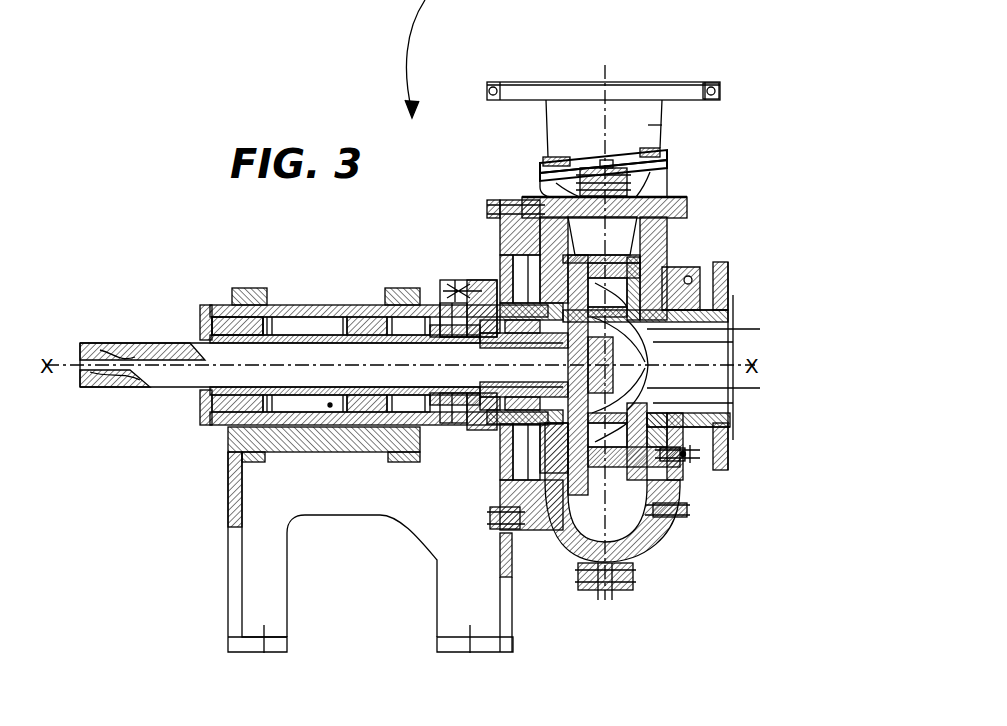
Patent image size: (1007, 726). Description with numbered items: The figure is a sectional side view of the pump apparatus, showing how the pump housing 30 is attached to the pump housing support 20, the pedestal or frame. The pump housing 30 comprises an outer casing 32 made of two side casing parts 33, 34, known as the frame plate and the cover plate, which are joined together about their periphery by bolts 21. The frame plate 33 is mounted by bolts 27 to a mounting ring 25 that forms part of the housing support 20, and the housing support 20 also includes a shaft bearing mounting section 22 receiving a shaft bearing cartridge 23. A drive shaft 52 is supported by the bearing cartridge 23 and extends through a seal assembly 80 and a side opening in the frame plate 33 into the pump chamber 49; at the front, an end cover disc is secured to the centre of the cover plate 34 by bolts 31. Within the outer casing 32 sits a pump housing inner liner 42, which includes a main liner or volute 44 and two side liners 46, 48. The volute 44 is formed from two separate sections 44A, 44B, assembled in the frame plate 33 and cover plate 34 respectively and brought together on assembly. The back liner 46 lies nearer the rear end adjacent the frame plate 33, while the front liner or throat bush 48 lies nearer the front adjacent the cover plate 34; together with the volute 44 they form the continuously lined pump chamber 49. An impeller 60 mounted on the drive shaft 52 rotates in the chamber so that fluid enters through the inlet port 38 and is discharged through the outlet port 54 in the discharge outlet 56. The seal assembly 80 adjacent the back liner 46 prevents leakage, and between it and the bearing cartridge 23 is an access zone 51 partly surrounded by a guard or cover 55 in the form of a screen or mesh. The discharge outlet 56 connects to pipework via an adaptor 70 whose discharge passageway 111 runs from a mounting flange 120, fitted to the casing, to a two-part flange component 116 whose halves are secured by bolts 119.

The pump housing support 20 is at (450, 615).
The bolts 21 is at (620, 600).
The shaft bearing mounting section 22 is at (228, 450).
The shaft bearing cartridge 23 is at (210, 410).
The mounting ring 25 is at (497, 242).
The bolts 27 is at (487, 525).
The pump housing 30 is at (702, 247).
The bolts 31 is at (690, 460).
The outer casing 32 is at (673, 547).
The side casing part (frame plate) 33 is at (567, 545).
The side casing part (cover plate) 34 is at (666, 570).
The inlet port 38 is at (737, 327).
The pump housing inner liner 42 is at (677, 523).
The main liner (volute) 44 is at (683, 530).
The main liner section 44A is at (547, 197).
The main liner section 44B is at (670, 200).
The side liner (back liner) 46 is at (543, 567).
The side liner (front liner or throat bush) 48 is at (730, 407).
The pump chamber 49 is at (678, 213).
The access zone 51 is at (452, 330).
The drive shaft 52 is at (133, 343).
The outlet port 54 is at (618, 160).
The guard or cover 55 is at (440, 298).
The discharge outlet 56 is at (543, 167).
The impeller 60 is at (653, 342).
The adaptor 70 is at (648, 125).
The seal assembly 80 is at (443, 253).
The discharge passageway or port 111 is at (565, 80).
The flange component 116 is at (677, 90).
The bolts 119 is at (723, 82).
The mounting flange 120 is at (663, 155).